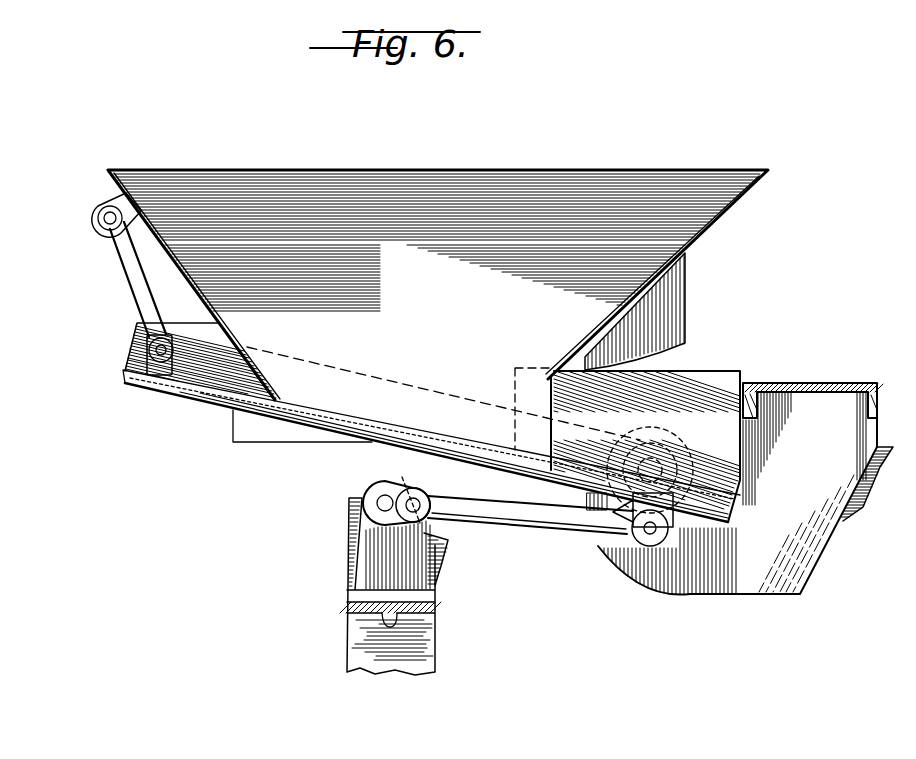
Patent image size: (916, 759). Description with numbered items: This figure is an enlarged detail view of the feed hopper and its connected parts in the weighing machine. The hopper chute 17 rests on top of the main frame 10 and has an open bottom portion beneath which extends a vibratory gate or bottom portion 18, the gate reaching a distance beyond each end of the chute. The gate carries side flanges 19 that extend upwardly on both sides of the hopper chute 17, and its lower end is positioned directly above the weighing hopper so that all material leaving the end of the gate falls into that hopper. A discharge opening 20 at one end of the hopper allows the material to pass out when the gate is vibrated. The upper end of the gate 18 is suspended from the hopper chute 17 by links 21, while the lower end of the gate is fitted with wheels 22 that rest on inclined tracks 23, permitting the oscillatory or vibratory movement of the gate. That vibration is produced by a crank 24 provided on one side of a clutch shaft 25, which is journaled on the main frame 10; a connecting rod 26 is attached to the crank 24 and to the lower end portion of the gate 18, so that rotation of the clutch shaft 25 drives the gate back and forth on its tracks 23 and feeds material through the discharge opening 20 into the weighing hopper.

The main frame 10 is at (867, 503).
The hopper chute 17 is at (393, 261).
The vibratory gate 18 is at (182, 388).
The side flanges 19 is at (727, 368).
The discharge opening 20 is at (547, 400).
The links 21 is at (129, 275).
The wheels 22 is at (612, 520).
The inclined tracks 23 is at (592, 504).
The crank 24 is at (374, 490).
The clutch shaft 25 is at (399, 488).
The connecting rod 26 is at (490, 506).